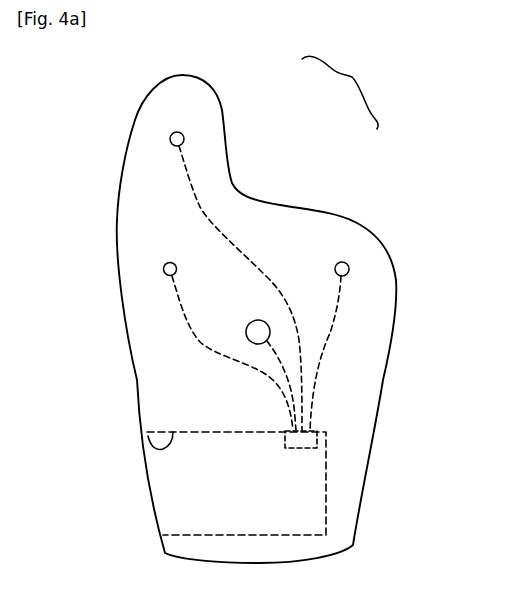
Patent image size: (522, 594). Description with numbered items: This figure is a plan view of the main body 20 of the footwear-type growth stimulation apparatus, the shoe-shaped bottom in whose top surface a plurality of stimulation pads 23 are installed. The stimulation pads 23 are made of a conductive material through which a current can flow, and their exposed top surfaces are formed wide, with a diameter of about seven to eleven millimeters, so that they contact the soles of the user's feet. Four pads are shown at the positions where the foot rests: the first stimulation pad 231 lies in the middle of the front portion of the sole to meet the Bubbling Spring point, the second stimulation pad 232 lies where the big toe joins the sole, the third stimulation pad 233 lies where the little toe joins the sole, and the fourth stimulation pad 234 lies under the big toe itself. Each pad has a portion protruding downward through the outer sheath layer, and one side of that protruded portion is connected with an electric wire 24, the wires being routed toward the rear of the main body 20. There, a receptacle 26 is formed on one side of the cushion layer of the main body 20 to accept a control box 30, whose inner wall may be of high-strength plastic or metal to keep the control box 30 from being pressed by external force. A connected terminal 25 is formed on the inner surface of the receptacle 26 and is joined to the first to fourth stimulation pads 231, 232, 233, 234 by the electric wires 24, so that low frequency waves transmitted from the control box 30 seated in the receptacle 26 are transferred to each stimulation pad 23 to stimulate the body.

The main body 20 is at (118, 216).
The stimulation pads 23 is at (342, 91).
The first stimulation pad 231 is at (248, 324).
The second stimulation pad 232 is at (168, 262).
The third stimulation pad 233 is at (337, 264).
The fourth stimulation pad 234 is at (176, 132).
The electric wire 24 is at (334, 325).
The connected terminal 25 is at (302, 448).
The receptacle 26 is at (150, 448).
The control box 30 is at (213, 493).